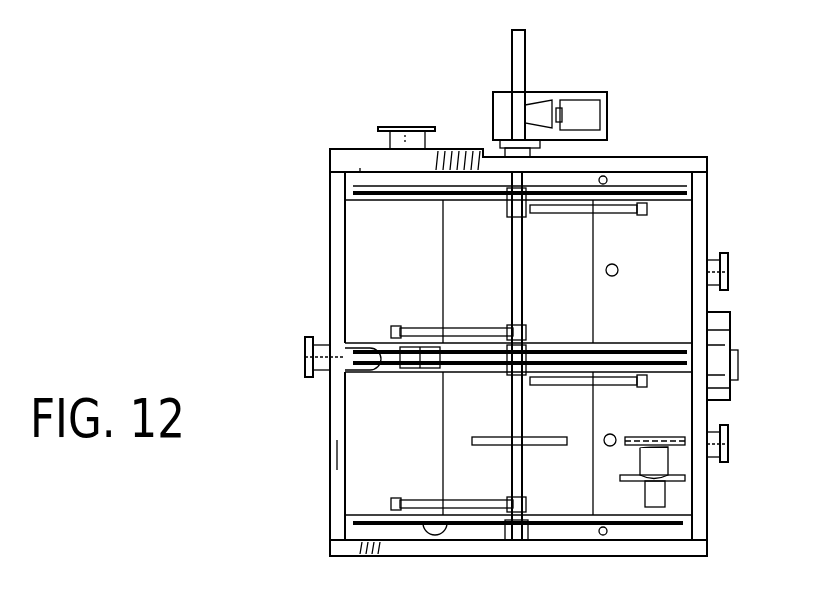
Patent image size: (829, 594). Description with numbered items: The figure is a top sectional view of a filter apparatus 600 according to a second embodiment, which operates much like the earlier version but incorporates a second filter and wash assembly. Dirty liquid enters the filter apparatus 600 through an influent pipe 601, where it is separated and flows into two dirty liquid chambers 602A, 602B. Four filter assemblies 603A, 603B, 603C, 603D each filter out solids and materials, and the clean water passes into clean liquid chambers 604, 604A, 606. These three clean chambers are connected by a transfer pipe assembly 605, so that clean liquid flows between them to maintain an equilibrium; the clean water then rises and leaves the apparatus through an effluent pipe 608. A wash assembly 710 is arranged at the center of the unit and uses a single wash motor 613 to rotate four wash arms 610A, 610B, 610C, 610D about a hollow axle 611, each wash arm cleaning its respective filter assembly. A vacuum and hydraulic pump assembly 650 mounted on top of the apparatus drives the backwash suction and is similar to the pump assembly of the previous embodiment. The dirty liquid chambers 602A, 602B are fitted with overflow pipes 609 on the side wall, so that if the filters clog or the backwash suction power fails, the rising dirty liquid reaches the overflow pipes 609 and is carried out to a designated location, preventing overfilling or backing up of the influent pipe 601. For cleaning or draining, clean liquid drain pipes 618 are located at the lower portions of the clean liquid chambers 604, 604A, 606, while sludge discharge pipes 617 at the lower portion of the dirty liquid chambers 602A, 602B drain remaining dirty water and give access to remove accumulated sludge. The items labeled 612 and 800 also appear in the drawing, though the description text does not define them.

The filter apparatus 600 is at (713, 86).
The influent pipe 601 is at (305, 352).
The dirty liquid chamber 602A is at (370, 406).
The dirty liquid chamber 602B is at (366, 249).
The filter assembly 603A is at (668, 524).
The filter assembly 603B is at (670, 372).
The filter assembly 603C is at (663, 342).
The filter assembly 603D is at (360, 200).
The clean liquid chamber 604 is at (353, 528).
The clean liquid chamber 604A is at (686, 356).
The transfer pipe assembly 605 is at (426, 538).
The clean liquid chamber 606 is at (642, 183).
The effluent pipe 608 is at (386, 127).
The overflow pipes 609 is at (728, 273).
The wash arm 610A is at (418, 498).
The wash arm 610B is at (617, 387).
The wash arm 610C is at (417, 327).
The wash arm 610D is at (650, 212).
The hollow axle 611 is at (516, 244).
The support bar 612 is at (550, 450).
The wash motor 613 is at (660, 486).
The sludge discharge pipes 617 is at (615, 264).
The clean liquid drain pipes 618 is at (602, 536).
The vacuum and hydraulic pump assembly 650 is at (543, 84).
The wash assembly 710 is at (517, 413).
The housing wall 800 is at (344, 452).